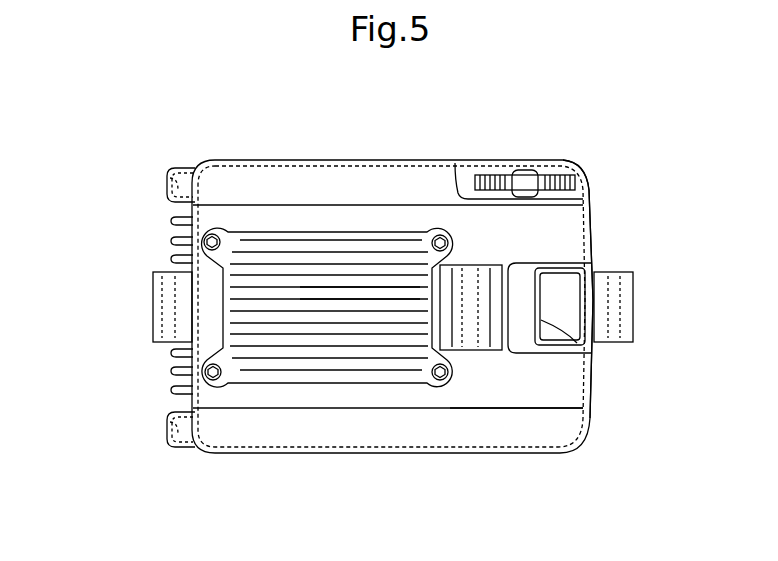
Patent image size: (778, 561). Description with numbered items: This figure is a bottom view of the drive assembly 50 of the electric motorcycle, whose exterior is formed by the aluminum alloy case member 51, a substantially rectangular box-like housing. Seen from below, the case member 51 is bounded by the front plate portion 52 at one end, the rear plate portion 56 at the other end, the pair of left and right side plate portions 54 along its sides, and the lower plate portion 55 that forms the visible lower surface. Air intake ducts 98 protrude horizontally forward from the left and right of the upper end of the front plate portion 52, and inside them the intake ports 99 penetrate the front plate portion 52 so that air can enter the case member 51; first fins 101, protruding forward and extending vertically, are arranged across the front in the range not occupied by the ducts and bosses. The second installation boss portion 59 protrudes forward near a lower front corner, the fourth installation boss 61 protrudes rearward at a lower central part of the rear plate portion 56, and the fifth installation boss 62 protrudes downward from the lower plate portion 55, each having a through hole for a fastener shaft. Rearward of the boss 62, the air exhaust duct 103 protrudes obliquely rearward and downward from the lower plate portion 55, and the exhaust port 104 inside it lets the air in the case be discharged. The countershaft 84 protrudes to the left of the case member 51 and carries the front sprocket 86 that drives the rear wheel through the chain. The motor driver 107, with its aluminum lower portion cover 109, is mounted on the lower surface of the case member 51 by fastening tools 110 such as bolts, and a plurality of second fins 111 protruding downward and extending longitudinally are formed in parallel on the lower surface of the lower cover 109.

The drive assembly 50 is at (197, 112).
The case member 51 is at (340, 159).
The front plate portion 52 is at (172, 365).
The side plate portion 54 is at (423, 158).
The lower plate portion 55 is at (565, 380).
The rear plate portion 56 is at (593, 230).
The second installation boss portion 59 is at (153, 310).
The fourth installation boss 61 is at (634, 308).
The fifth installation boss 62 is at (470, 350).
The countershaft 84 is at (525, 170).
The front sprocket 86 is at (583, 183).
The air intake duct 98 is at (180, 168).
The intake port 99 is at (166, 183).
The fins 101 is at (170, 219).
The air exhaust duct 103 is at (554, 263).
The exhaust port 104 is at (583, 350).
The motor driver 107 is at (288, 384).
The lower portion cover 109 is at (328, 382).
The fastening tool 110 is at (213, 233).
The fins 111 is at (305, 297).